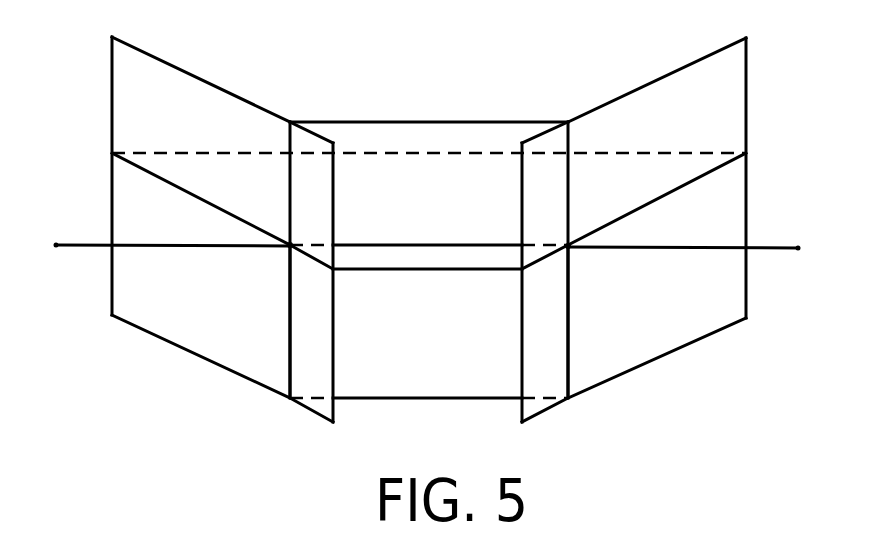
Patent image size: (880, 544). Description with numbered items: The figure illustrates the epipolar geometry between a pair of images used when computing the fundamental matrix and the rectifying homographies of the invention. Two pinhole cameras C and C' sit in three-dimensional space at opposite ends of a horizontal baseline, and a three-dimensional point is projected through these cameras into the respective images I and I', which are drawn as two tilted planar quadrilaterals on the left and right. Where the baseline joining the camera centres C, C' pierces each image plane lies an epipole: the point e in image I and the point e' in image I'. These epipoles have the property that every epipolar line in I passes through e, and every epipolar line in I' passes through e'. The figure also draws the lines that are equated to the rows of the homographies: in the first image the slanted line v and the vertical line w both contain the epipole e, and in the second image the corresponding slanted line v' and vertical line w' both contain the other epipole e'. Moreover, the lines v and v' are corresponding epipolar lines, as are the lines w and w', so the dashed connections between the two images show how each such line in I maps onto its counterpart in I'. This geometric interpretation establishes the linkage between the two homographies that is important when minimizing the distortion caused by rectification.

The pinhole camera C is at (158, 263).
The pinhole camera C' is at (699, 265).
The image I is at (201, 217).
The image I' is at (657, 218).
The epipole e is at (281, 257).
The epipole e' is at (580, 259).
The line v is at (201, 199).
The line v' is at (657, 199).
The line w is at (272, 321).
The line w' is at (585, 321).